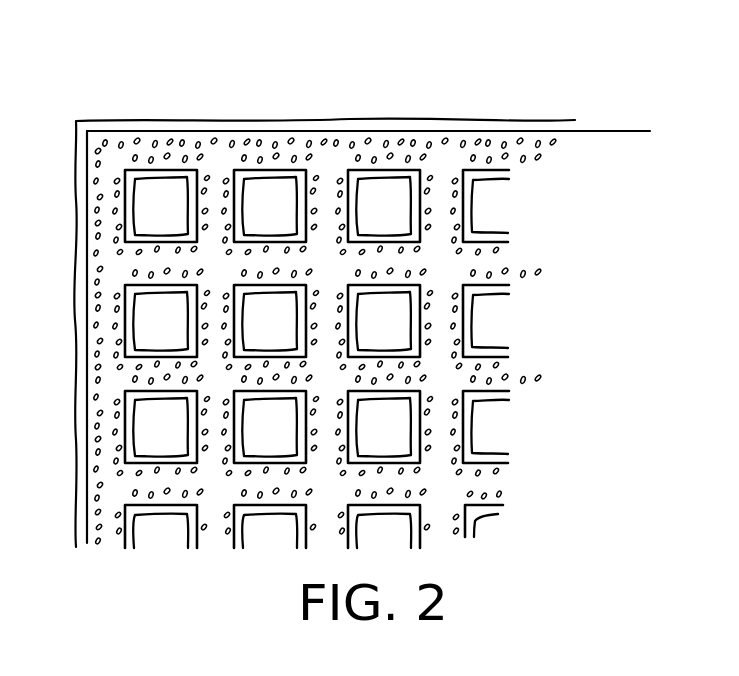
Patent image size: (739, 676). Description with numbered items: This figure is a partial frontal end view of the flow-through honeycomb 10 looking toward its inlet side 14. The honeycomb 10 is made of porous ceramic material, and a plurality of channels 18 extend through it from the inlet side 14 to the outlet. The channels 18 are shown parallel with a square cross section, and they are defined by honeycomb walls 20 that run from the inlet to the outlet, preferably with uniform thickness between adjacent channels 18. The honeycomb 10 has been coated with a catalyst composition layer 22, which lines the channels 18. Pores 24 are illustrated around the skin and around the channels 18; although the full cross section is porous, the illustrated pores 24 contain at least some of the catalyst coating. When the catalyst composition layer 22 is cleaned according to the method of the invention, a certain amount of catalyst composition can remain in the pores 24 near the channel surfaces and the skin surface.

The flow-through honeycomb 10 is at (243, 93).
The inlet side 14 is at (112, 152).
The channels 18 is at (155, 202).
The honeycomb walls 20 is at (488, 368).
The catalyst composition layer 22 is at (302, 173).
The pores 24 is at (112, 208).